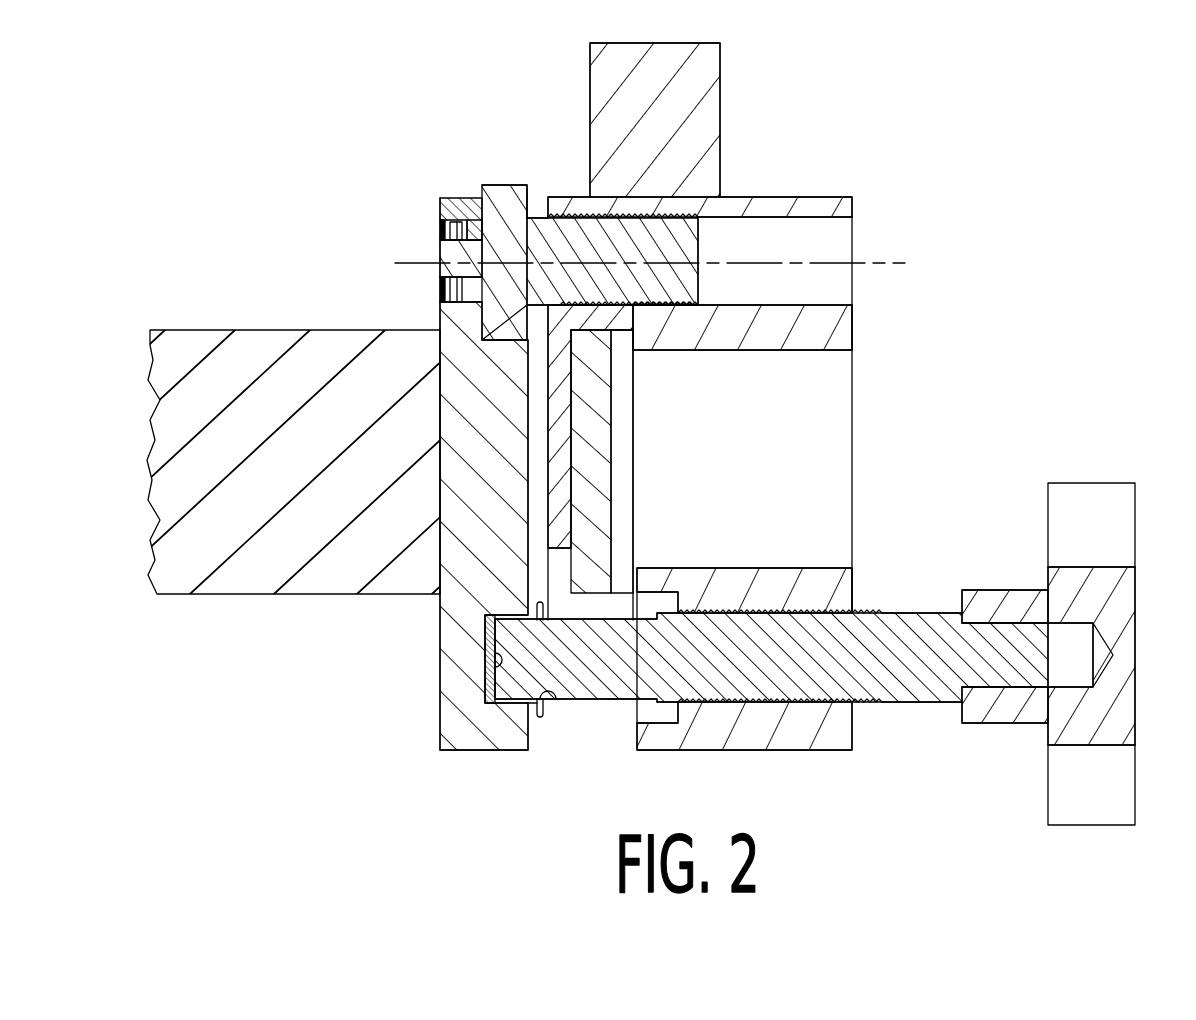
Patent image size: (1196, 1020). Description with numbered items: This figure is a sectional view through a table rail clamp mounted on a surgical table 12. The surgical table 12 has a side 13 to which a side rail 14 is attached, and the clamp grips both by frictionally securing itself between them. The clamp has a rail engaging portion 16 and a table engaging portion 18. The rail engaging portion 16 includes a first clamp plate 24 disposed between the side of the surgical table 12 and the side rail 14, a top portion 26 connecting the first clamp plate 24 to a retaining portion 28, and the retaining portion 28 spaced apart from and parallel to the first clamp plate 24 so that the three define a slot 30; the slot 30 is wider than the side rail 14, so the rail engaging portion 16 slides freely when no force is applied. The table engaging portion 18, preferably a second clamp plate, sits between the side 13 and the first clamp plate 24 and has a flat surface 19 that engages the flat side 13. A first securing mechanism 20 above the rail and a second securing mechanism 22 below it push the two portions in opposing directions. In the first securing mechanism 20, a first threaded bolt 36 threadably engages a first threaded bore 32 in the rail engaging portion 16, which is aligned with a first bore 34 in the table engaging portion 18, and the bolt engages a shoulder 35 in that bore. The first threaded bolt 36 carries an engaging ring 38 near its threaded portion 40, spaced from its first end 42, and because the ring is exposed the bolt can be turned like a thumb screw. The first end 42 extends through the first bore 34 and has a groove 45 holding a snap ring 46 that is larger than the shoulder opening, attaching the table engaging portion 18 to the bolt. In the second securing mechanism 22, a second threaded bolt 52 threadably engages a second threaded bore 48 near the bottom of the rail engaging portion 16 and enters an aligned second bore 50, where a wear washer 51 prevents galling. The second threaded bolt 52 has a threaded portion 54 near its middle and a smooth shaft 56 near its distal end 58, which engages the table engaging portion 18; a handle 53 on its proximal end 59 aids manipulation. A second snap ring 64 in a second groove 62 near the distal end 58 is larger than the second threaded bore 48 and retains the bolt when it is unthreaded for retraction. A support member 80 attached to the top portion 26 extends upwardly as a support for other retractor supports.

The surgical table 12 is at (201, 326).
The side 13 is at (440, 548).
The side rail 14 is at (587, 380).
The rail engaging portion 16 is at (817, 750).
The table engaging portion 18 is at (438, 629).
The flat surface 19 is at (440, 600).
The first securing mechanism 20 is at (507, 187).
The second securing mechanism 22 is at (865, 609).
The first clamp plate 24 is at (565, 412).
The top portion 26 is at (757, 205).
The retaining portion 28 is at (823, 322).
The slot 30 is at (625, 455).
The first threaded bore 32 is at (713, 221).
The first bore 34 is at (438, 198).
The shoulder 35 is at (471, 197).
The first threaded bolt 36 is at (690, 241).
The engaging ring 38 is at (529, 190).
The threaded portion 40 is at (640, 317).
The first end 42 is at (440, 269).
The groove 45 is at (440, 283).
The snap ring 46 is at (440, 224).
The second threaded bore 48 is at (764, 702).
The second bore 50 is at (537, 705).
The wear washer 51 is at (487, 688).
The second threaded bolt 52 is at (905, 688).
The handle 53 is at (1122, 510).
The threaded portion 54 is at (785, 618).
The smooth shaft 56 is at (585, 688).
The distal end 58 is at (485, 652).
The proximal end 59 is at (1052, 656).
The second groove 62 is at (568, 694).
The second snap ring 64 is at (546, 707).
The support member 80 is at (663, 56).